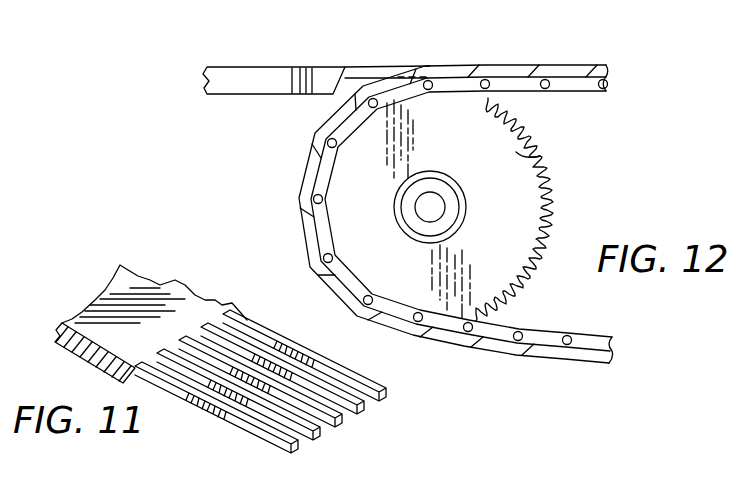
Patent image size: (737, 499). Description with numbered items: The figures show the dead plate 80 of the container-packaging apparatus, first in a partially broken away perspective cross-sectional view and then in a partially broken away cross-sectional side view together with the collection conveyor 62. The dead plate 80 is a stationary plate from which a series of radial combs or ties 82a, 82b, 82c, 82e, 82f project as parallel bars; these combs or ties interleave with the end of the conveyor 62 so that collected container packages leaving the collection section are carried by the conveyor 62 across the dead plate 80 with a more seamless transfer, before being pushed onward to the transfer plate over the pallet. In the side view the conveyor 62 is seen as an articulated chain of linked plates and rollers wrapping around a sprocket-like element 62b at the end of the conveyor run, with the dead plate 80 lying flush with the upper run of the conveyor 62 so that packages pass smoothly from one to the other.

In FIG. 12, the dead plate 80 is at (247, 82).
In FIG. 11, the dead plate 80 is at (123, 316).
In FIG. 12, the radial comb or tie 82a is at (385, 72).
In FIG. 11, the radial comb or tie 82a is at (268, 434).
In FIG. 11, the radial comb or tie 82b is at (319, 438).
In FIG. 11, the radial comb or tie 82c is at (338, 430).
In FIG. 11, the radial comb or tie 82e is at (368, 404).
In FIG. 11, the radial comb or tie 82f is at (367, 374).
In FIG. 12, the conveyor 62 is at (517, 74).
In FIG. 12, the sprocket teeth 62b is at (547, 168).